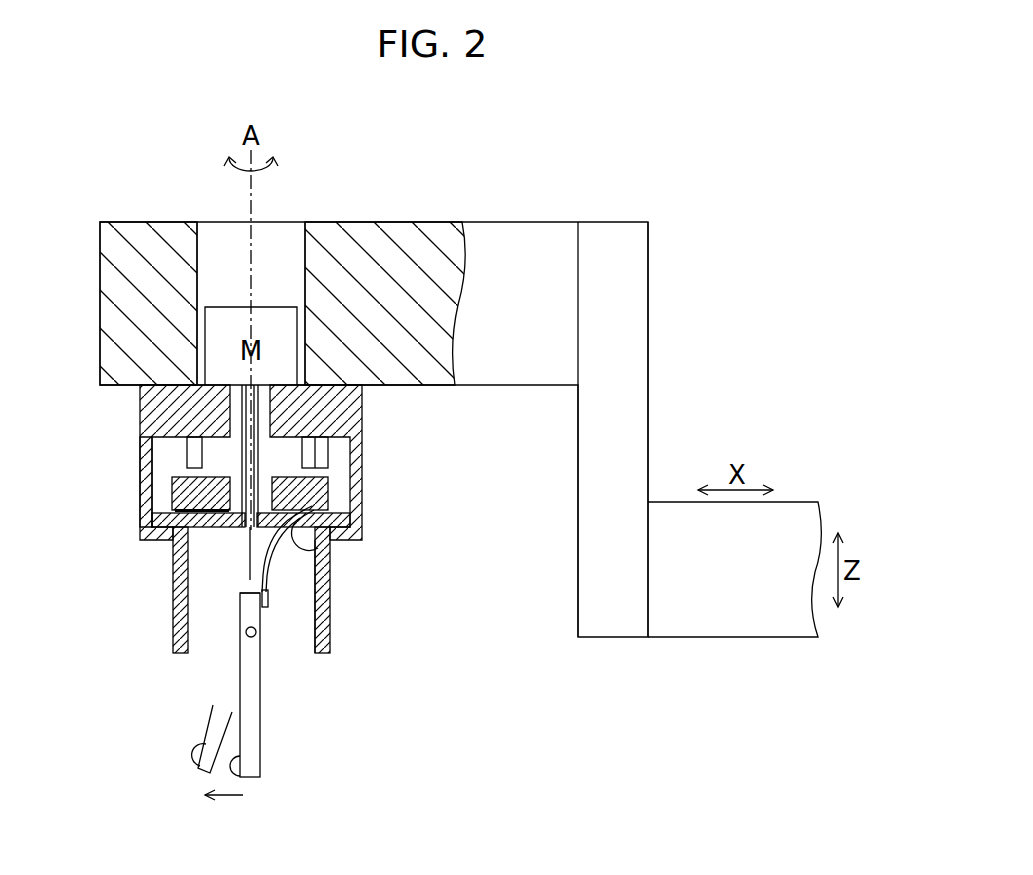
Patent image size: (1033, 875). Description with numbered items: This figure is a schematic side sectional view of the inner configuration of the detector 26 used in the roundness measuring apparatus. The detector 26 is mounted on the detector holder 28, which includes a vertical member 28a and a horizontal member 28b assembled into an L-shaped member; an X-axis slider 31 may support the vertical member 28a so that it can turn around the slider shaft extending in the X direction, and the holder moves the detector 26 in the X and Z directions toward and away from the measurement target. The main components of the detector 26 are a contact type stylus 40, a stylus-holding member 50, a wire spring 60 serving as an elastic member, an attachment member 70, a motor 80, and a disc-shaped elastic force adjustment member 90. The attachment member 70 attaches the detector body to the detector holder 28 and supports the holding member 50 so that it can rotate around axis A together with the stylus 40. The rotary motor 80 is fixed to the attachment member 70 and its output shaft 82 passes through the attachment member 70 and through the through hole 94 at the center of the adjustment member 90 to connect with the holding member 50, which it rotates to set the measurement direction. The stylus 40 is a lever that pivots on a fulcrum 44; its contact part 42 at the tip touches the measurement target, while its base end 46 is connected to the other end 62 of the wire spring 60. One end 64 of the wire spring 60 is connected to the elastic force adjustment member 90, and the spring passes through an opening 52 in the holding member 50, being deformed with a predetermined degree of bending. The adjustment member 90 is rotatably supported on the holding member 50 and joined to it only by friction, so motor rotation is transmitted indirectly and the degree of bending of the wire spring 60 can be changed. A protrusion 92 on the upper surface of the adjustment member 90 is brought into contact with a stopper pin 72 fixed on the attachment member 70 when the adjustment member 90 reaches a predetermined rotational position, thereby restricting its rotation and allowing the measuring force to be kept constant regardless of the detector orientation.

The detector 26 is at (83, 410).
The detector holder 28 is at (524, 232).
The vertical member 28a is at (620, 360).
The horizontal member 28b is at (562, 296).
The X-axis slider 31 is at (684, 619).
The contact type stylus 40 is at (262, 724).
The contact part 42 is at (185, 748).
The fulcrum 44 is at (248, 636).
The base end 46 is at (250, 607).
The stylus-holding member 50 is at (330, 632).
The opening 52 is at (305, 531).
The wire spring 60 is at (327, 582).
The other end of wire spring 62 is at (268, 600).
The one end of wire spring 64 is at (296, 479).
The attachment member 70 is at (358, 428).
The stopper pin 72 is at (143, 451).
The motor 80 is at (277, 320).
The output shaft 82 is at (260, 408).
The elastic force adjustment member 90 is at (328, 492).
The protrusion 92 is at (350, 461).
The through hole 94 is at (237, 480).